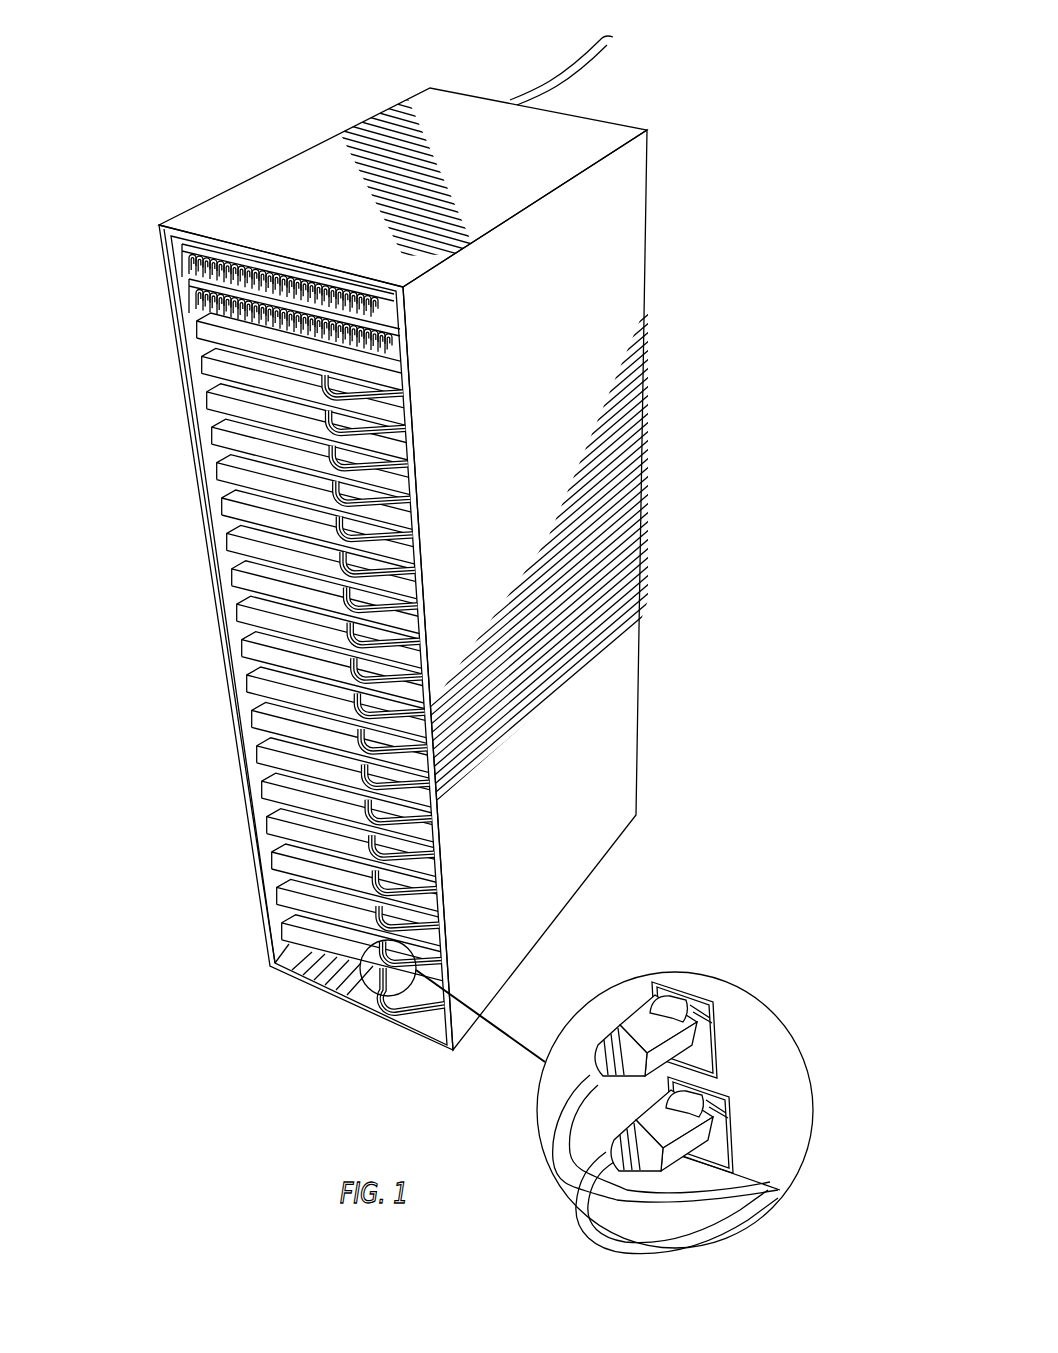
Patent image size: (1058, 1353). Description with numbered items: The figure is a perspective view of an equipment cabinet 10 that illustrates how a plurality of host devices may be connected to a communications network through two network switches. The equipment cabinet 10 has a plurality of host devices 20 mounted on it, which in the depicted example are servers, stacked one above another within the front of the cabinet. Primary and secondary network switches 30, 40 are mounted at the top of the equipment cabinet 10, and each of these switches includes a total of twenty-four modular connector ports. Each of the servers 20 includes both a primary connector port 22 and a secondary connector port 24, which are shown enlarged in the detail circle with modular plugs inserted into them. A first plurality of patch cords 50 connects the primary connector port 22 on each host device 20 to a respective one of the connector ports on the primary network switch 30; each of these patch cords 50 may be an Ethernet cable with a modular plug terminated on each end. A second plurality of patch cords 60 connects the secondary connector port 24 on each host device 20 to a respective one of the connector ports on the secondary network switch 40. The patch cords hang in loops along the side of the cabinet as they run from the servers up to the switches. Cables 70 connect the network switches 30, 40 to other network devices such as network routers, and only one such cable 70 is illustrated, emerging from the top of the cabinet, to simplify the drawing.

The equipment cabinet 10 is at (232, 190).
The host devices 20 is at (245, 577).
The primary RJ-45 style connector port 22 is at (682, 982).
The secondary RJ-45 connector port 24 is at (727, 1125).
The primary network switch 30 is at (190, 289).
The secondary network switch 40 is at (188, 253).
The first plurality of RJ-45 patch cords 50 is at (400, 487).
The second plurality of RJ-45 patch cords 60 is at (407, 453).
The cables 70 is at (580, 70).